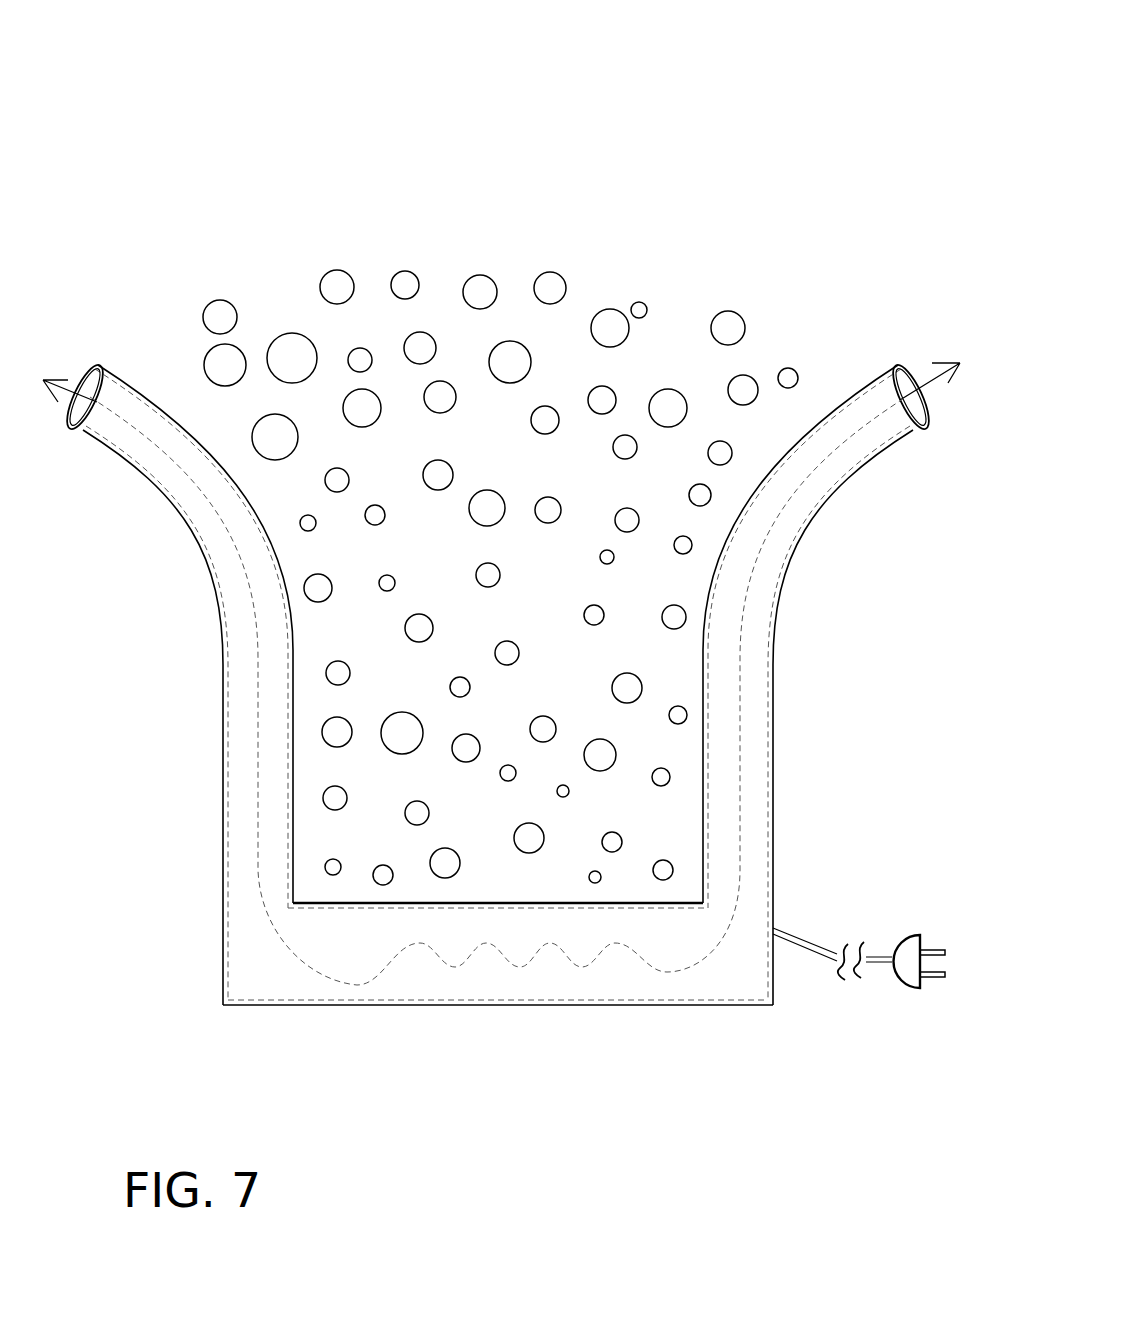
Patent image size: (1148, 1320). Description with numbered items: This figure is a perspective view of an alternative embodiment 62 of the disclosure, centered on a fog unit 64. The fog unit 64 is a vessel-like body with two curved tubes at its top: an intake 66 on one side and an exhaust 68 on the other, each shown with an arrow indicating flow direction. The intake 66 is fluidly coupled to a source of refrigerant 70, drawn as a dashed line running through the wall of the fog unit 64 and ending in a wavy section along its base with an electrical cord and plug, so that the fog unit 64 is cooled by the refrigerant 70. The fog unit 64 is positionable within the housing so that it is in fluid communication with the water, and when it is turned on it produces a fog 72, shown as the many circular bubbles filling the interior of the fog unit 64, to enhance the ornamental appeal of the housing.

The alternative embodiment 62 is at (832, 217).
The fog unit 64 is at (223, 863).
The intake 66 is at (900, 366).
The exhaust 68 is at (98, 368).
The refrigerant 70 is at (750, 802).
The fog 72 is at (350, 277).